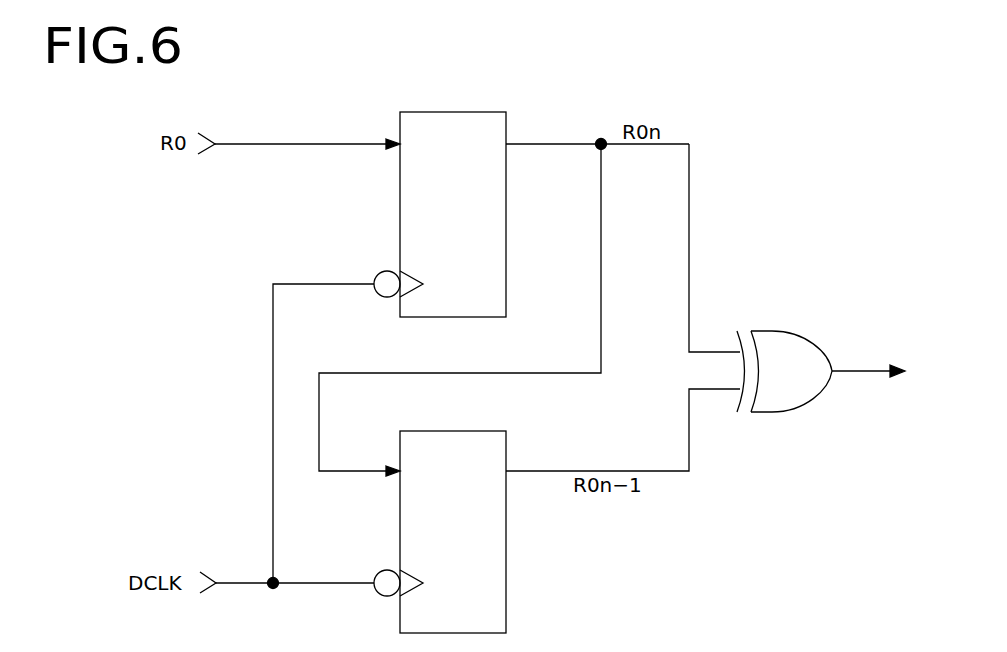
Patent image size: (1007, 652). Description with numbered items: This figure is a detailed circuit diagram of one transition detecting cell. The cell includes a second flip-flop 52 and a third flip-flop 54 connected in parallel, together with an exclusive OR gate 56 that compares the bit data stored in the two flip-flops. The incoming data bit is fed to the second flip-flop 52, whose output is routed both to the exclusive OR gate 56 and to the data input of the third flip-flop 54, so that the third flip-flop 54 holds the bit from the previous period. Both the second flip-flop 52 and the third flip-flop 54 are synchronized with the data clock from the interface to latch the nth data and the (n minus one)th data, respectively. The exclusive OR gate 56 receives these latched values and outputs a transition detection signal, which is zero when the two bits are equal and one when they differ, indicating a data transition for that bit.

The second flip-flop 52 is at (506, 127).
The third flip-flop 54 is at (506, 444).
The exclusive OR gate 56 is at (800, 406).